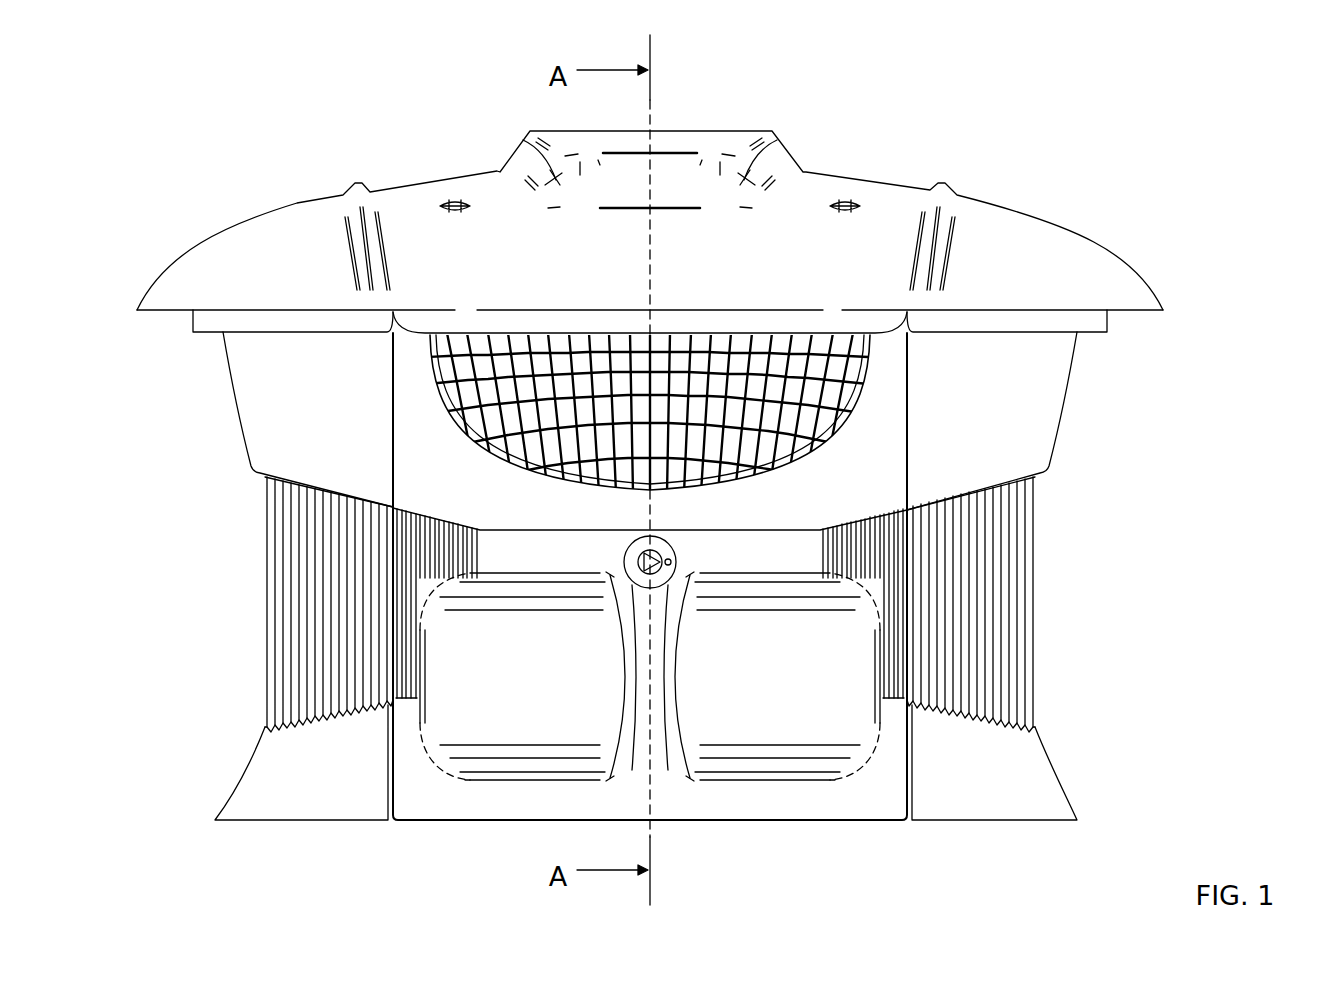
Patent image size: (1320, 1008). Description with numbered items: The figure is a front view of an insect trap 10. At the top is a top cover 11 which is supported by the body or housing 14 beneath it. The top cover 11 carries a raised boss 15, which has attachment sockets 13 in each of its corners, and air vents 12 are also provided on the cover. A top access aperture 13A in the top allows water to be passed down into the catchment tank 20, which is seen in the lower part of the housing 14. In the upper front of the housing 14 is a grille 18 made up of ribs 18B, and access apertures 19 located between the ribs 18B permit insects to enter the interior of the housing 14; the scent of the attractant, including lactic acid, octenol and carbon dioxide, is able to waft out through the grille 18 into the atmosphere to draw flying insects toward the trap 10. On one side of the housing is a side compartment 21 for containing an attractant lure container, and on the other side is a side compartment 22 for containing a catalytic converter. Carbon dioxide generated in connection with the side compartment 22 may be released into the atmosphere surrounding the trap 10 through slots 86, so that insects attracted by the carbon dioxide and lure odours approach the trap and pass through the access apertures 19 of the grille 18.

The insect trap 10 is at (695, 459).
The top cover 11 is at (975, 237).
The air vents 12 is at (452, 197).
The attachment sockets 13 is at (555, 180).
The top access aperture 13A is at (840, 183).
The body or housing 14 is at (1022, 402).
The raised boss 15 is at (690, 140).
The grille 18 is at (640, 415).
The ribs 18B is at (827, 415).
The access apertures 19 is at (850, 358).
The catchment tank 20 is at (742, 712).
The side compartment 21 is at (310, 618).
The side compartment 22 is at (1017, 604).
The slots 86 is at (995, 622).